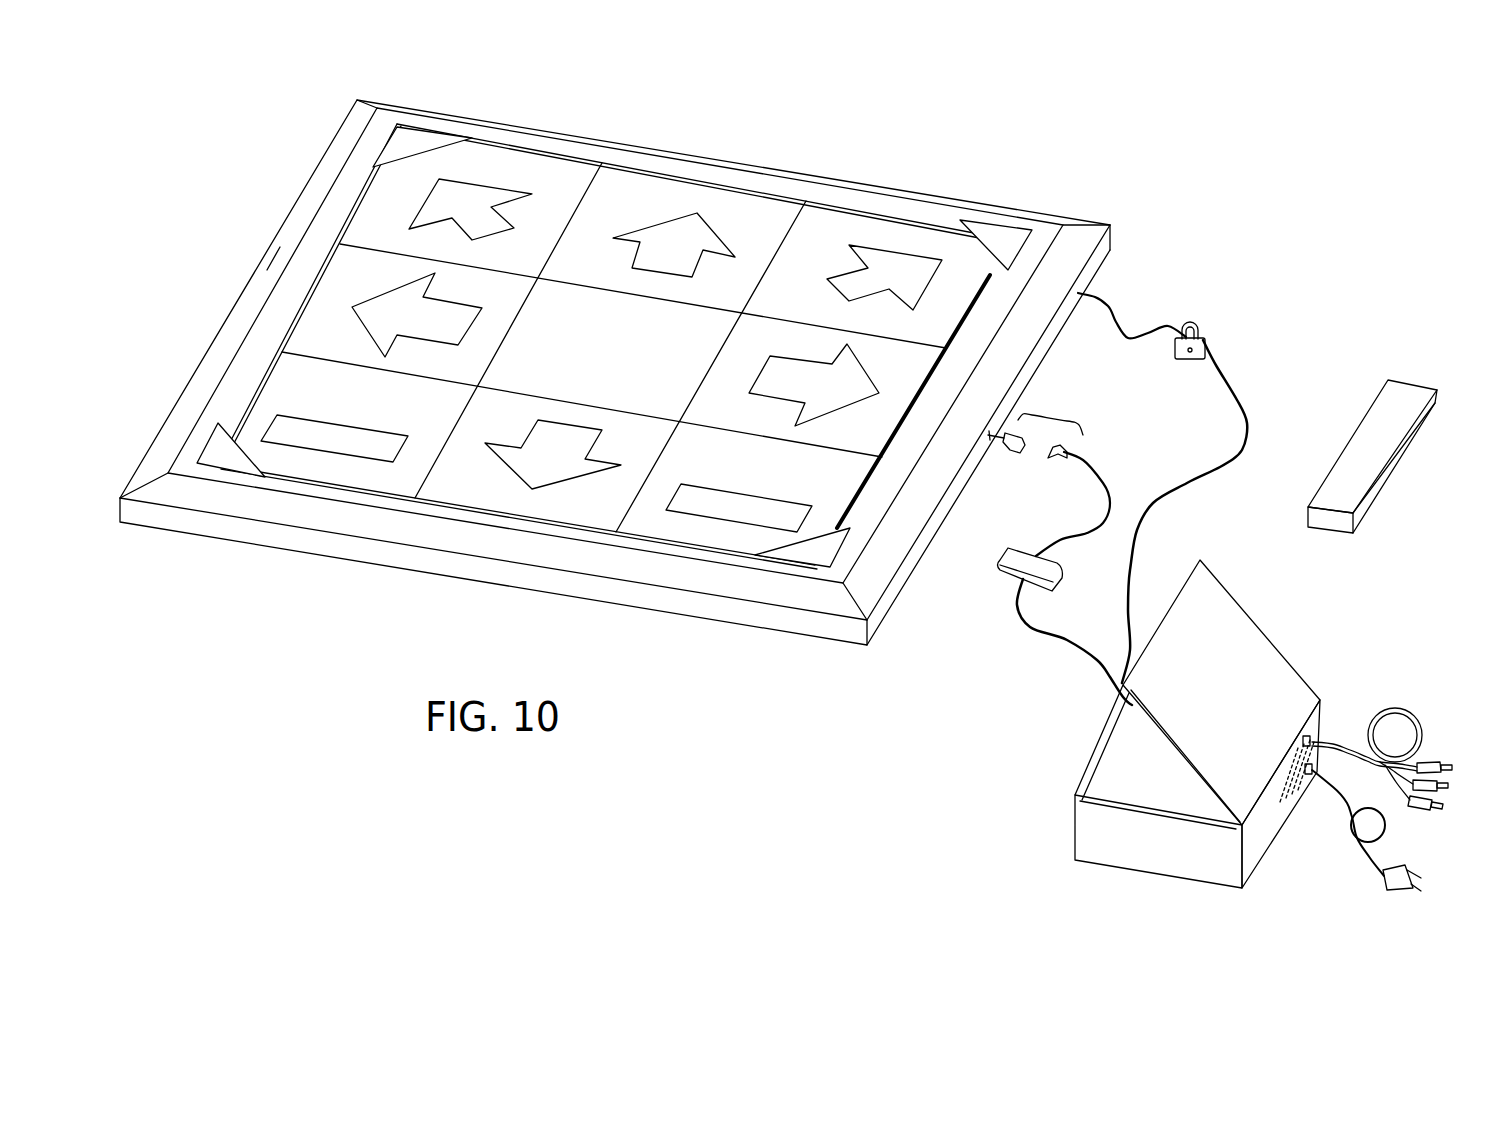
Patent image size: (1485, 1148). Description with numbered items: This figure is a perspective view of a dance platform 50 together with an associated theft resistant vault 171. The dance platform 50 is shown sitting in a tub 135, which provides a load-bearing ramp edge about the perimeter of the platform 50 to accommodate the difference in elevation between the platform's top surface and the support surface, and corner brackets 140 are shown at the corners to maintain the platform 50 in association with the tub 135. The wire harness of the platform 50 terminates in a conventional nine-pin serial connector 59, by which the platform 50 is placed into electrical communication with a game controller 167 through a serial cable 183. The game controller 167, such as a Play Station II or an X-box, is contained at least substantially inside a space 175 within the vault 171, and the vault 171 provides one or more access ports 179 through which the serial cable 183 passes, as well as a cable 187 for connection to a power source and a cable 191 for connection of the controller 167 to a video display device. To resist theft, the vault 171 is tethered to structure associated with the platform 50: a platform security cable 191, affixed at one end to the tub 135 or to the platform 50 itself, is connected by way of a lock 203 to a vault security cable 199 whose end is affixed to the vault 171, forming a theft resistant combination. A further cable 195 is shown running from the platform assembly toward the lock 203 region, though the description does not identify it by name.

The dance platform 50 is at (655, 365).
The 9-pin serial connector 59 is at (1035, 423).
The tub 135 is at (1068, 251).
The corner brackets 140 is at (991, 236).
The game controller 167 is at (1370, 468).
The theft resistant vault 171 is at (1107, 835).
The space 175 is at (1138, 782).
The access ports 179 is at (1305, 735).
The serial cable 183 is at (1017, 623).
The cable 187 is at (1383, 876).
The platform security cable 191 is at (1413, 714).
The cable 195 is at (1118, 318).
The vault security cable 199 is at (1238, 398).
The lock 203 is at (1191, 352).